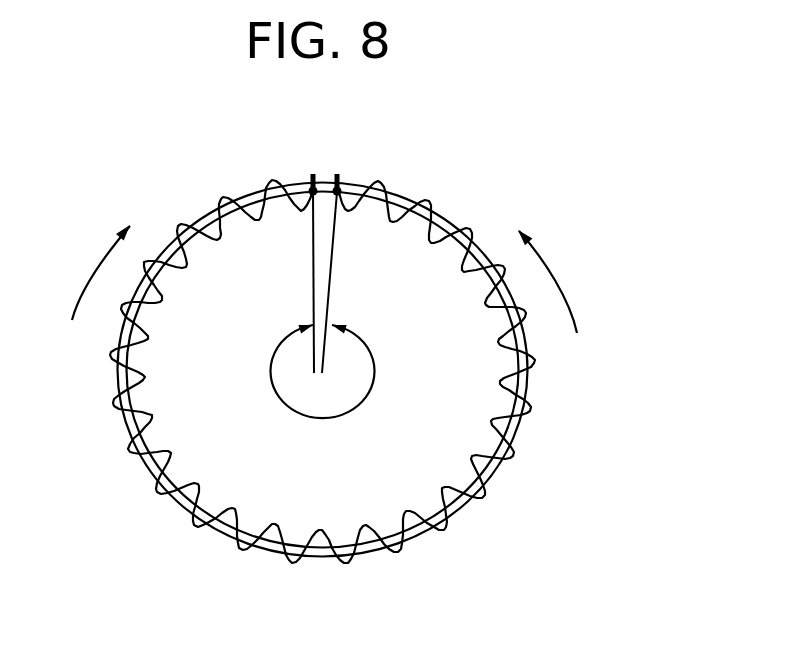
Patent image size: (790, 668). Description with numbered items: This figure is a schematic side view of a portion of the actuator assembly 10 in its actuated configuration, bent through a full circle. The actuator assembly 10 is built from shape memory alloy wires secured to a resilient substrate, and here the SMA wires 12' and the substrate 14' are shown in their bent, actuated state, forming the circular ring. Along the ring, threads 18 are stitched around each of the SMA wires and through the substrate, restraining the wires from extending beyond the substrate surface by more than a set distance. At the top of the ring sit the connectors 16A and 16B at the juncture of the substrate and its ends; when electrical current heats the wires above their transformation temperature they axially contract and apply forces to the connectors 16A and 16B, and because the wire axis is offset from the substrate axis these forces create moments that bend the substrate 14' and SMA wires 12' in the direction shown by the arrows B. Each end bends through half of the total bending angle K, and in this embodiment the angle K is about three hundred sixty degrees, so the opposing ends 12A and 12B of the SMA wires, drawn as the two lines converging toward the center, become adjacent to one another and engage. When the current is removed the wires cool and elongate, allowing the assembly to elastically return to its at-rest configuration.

The actuator assembly 10 is at (322, 335).
The SMA wires in actuated configuration 12' is at (323, 370).
The substrate in actuated configuration 14' is at (323, 344).
The threads 18 is at (482, 222).
The first end of SMA wires 12A is at (305, 222).
The second end of SMA wires 12B is at (337, 223).
The first connector 16A is at (312, 175).
The second connector 16B is at (337, 175).
The total bending angle K is at (353, 407).
The bending direction arrows B is at (90, 262).